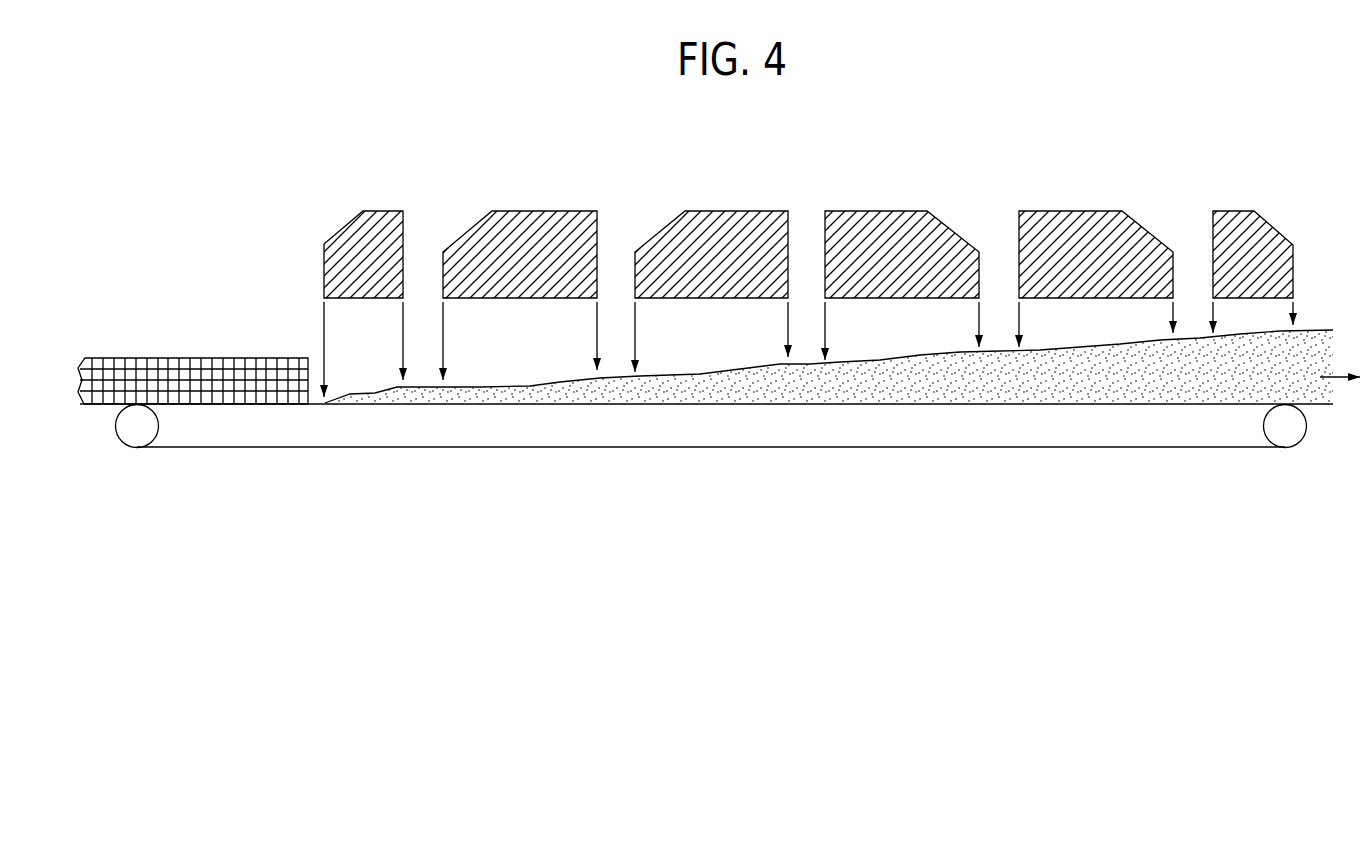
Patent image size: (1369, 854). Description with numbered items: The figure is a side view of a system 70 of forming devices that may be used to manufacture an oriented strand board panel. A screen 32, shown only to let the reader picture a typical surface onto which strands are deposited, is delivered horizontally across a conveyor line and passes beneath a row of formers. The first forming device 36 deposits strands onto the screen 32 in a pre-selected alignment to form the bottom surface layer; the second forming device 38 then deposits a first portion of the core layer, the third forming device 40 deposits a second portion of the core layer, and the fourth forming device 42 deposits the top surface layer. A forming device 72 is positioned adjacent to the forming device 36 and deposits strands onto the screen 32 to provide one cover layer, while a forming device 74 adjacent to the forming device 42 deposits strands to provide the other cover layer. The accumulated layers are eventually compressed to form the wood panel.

The system 70 is at (362, 484).
The screen 32 is at (207, 375).
The forming device 72 is at (383, 211).
The first forming device 36 is at (546, 211).
The second forming device 38 is at (725, 211).
The third forming device 40 is at (873, 211).
The fourth forming device 42 is at (1078, 211).
The forming device 74 is at (1230, 211).